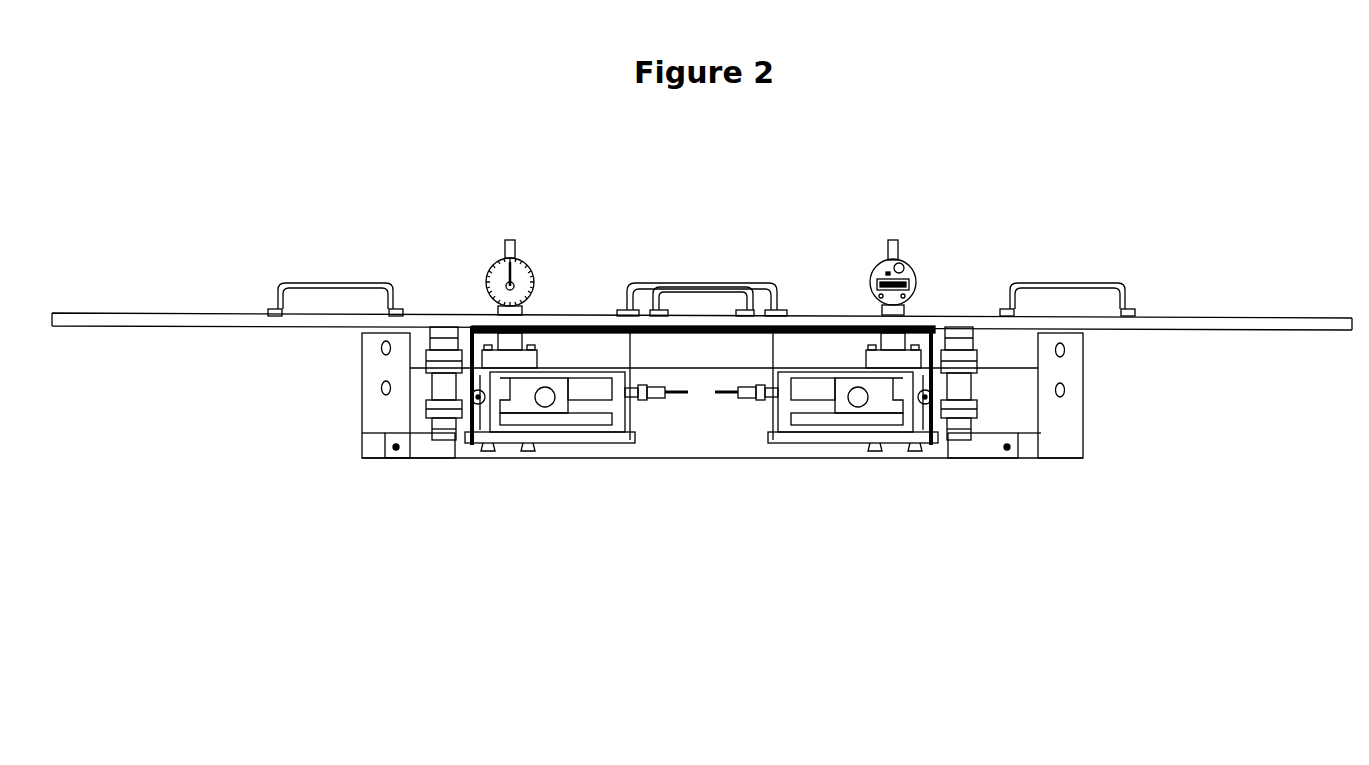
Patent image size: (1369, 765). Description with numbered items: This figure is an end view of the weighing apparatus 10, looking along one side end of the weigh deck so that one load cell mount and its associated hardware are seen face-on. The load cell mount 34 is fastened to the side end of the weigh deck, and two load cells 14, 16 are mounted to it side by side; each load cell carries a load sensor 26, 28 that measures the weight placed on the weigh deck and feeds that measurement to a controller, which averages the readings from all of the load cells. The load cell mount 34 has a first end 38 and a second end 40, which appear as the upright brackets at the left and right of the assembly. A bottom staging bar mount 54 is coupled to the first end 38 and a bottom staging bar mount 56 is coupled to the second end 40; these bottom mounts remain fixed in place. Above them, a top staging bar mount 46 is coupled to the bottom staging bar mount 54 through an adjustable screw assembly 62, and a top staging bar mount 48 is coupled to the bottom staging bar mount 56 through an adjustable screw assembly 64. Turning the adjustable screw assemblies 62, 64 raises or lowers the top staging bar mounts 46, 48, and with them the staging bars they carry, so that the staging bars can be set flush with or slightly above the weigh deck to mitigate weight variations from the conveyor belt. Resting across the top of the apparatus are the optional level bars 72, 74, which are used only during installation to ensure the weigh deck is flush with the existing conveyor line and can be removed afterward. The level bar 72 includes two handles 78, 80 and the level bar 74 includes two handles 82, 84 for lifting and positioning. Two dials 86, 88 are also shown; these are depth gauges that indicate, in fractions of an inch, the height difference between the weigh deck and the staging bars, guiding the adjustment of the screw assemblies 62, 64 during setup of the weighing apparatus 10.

The weighing apparatus 10 is at (872, 178).
The load cell 14 is at (552, 440).
The load cell 16 is at (860, 440).
The load sensor 26 is at (592, 405).
The load sensor 28 is at (803, 400).
The load cell mount 34 is at (693, 445).
The first end 38 is at (365, 370).
The second end 40 is at (1073, 413).
The top staging bar mount 46 is at (445, 335).
The top staging bar mount 48 is at (960, 335).
The bottom staging bar mount 54 is at (385, 433).
The bottom staging bar mount 56 is at (972, 445).
The adjustable screw assembly 62 is at (442, 437).
The adjustable screw assembly 64 is at (975, 380).
The level bar 72 is at (1243, 318).
The level bar 74 is at (165, 318).
The handle 78 is at (679, 285).
The handle 80 is at (1050, 283).
The handle 82 is at (325, 283).
The handle 84 is at (650, 292).
The dial 86 is at (524, 262).
The dial 88 is at (880, 265).